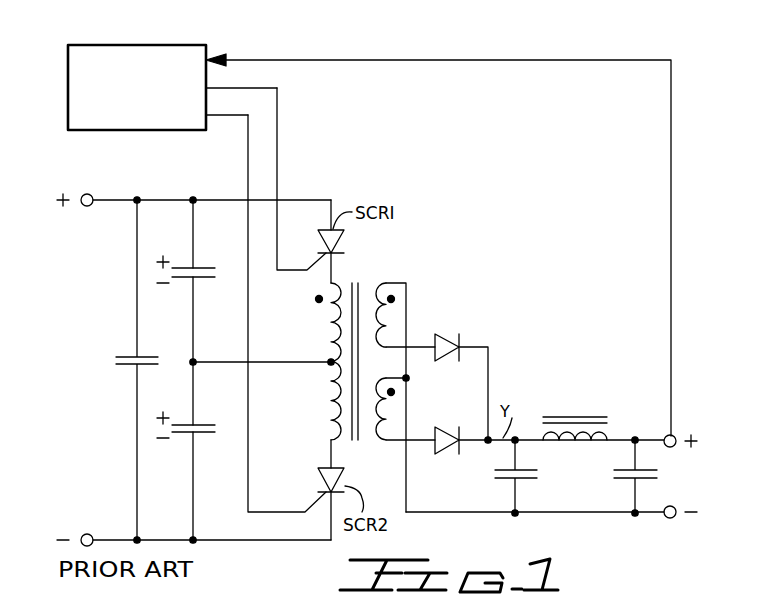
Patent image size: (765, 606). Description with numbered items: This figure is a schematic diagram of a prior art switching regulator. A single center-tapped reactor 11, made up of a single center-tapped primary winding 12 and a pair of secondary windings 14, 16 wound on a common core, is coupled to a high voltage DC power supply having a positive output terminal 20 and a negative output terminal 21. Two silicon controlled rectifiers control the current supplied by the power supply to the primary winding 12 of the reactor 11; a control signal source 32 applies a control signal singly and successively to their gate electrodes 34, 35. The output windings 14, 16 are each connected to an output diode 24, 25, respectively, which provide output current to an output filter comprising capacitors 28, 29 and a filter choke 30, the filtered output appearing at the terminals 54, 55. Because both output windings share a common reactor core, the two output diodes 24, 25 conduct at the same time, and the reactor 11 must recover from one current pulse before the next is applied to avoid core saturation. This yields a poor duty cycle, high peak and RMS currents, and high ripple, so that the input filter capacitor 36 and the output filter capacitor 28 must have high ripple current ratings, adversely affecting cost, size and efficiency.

The center-tapped reactor 11 is at (361, 385).
The center-tapped primary winding 12 is at (329, 316).
The secondary winding 14 is at (406, 316).
The secondary winding 16 is at (380, 410).
The positive output terminal 20 is at (92, 194).
The negative output terminal 21 is at (89, 534).
The output diode 24 is at (450, 332).
The output diode 25 is at (448, 427).
The output filter capacitor 28 is at (468, 478).
The capacitor 29 is at (614, 474).
The filter choke 30 is at (607, 435).
The control signal source 32 is at (138, 45).
The gate electrode 34 is at (315, 264).
The gate electrode 35 is at (303, 504).
The input filter capacitor 36 is at (116, 361).
The positive output terminal 54 is at (677, 436).
The negative output terminal 55 is at (676, 507).